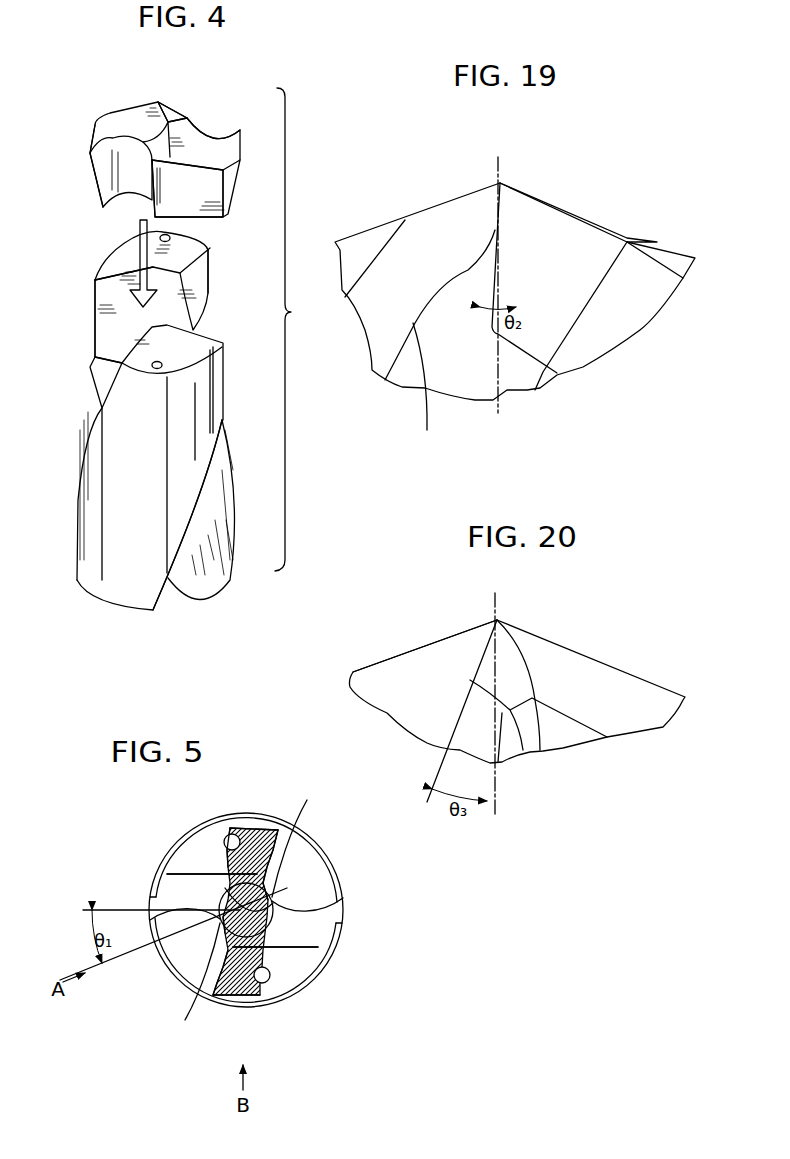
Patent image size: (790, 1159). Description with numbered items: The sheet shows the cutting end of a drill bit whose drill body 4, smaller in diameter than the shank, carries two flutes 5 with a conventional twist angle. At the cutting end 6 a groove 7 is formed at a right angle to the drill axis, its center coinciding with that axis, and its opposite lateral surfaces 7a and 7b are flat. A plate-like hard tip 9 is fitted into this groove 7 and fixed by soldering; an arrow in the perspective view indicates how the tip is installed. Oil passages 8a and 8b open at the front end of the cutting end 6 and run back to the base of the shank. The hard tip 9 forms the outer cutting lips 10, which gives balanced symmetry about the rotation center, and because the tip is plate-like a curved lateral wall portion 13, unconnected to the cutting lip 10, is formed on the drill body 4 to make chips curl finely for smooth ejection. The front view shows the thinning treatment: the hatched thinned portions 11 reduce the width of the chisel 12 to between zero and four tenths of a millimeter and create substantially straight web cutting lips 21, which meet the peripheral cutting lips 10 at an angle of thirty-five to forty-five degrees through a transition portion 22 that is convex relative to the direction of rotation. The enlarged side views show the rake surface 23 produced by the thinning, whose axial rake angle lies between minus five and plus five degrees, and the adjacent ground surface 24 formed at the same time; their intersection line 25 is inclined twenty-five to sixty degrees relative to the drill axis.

In FIG. 4, the drill body 4 is at (97, 465).
In FIG. 4, the flute 5 is at (220, 480).
In FIG. 4, the cutting end 6 is at (84, 295).
In FIG. 4, the groove 7 is at (112, 333).
In FIG. 4, the lateral surface 7a is at (112, 295).
In FIG. 19, the lateral surface 7a is at (387, 237).
In FIG. 5, the lateral surface 7a is at (187, 873).
In FIG. 4, the lateral surface 7b is at (95, 357).
In FIG. 19, the lateral surface 7b is at (592, 298).
In FIG. 5, the lateral surface 7b is at (313, 950).
In FIG. 4, the oil passage 8a is at (163, 366).
In FIG. 5, the oil passage 8a is at (270, 978).
In FIG. 4, the oil passage 8b is at (172, 238).
In FIG. 5, the oil passage 8b is at (228, 833).
In FIG. 4, the hard tip 9 is at (147, 97).
In FIG. 4, the cutting lip 10 is at (112, 135).
In FIG. 19, the cutting lip 10 is at (426, 387).
In FIG. 5, the cutting lip 10 is at (342, 900).
In FIG. 4, the thinned portion 11 is at (183, 115).
In FIG. 5, the thinned portion 11 is at (252, 830).
In FIG. 4, the chisel 12 is at (165, 115).
In FIG. 5, the chisel 12 is at (205, 855).
In FIG. 4, the lateral wall portion 13 is at (155, 178).
In FIG. 5, the lateral wall portion 13 is at (282, 831).
In FIG. 19, the cutting lip of the web 21 is at (497, 227).
In FIG. 20, the cutting lip of the web 21 is at (395, 653).
In FIG. 5, the cutting lip of the web 21 is at (266, 897).
In FIG. 19, the transition portion 22 is at (472, 270).
In FIG. 5, the transition portion 22 is at (288, 893).
In FIG. 19, the rake surface 23 is at (500, 267).
In FIG. 20, the rake surface 23 is at (438, 673).
In FIG. 20, the ground surface 24 is at (515, 682).
In FIG. 20, the intersection line 25 is at (482, 643).